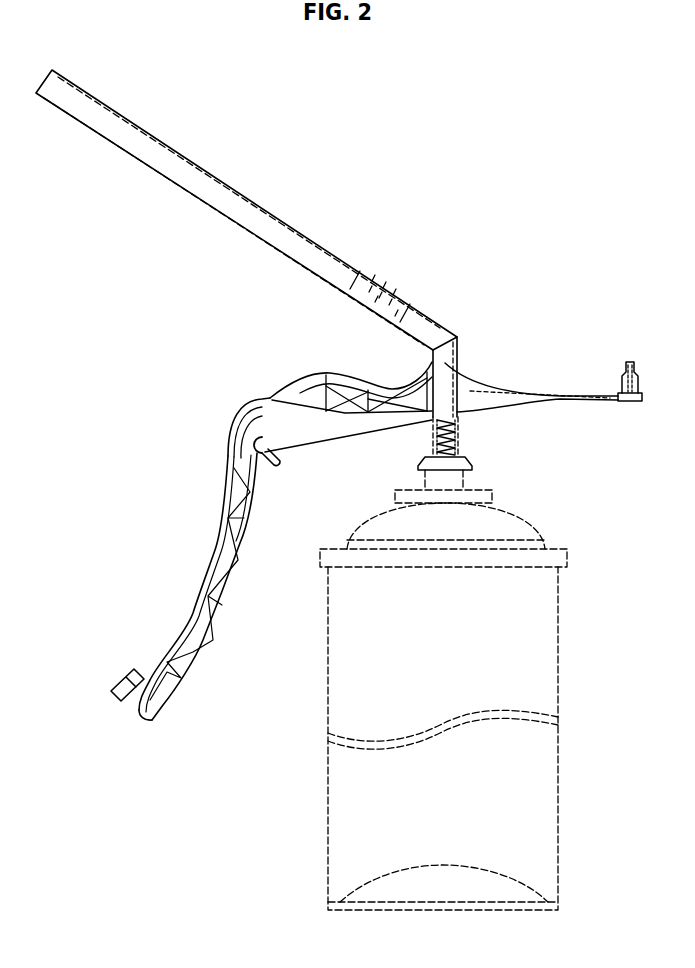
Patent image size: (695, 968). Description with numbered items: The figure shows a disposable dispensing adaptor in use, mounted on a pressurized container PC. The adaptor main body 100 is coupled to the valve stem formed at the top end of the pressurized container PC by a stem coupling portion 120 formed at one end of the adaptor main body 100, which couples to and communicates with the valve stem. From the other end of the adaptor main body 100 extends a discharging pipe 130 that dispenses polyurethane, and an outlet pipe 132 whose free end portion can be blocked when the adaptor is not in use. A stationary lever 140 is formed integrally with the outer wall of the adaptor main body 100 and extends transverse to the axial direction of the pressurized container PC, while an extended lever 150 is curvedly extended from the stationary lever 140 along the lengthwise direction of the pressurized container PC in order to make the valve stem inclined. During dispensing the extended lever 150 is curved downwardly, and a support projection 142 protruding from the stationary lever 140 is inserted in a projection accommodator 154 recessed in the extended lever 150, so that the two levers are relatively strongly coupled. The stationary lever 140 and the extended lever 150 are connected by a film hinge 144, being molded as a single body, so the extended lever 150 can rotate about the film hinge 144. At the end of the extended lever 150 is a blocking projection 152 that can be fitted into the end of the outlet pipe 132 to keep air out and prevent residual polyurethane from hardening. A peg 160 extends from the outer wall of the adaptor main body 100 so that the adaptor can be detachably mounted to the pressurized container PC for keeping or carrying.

The adaptor main body 100 is at (456, 368).
The stem coupling portion 120 is at (458, 436).
The discharging pipe 130 is at (400, 297).
The outlet pipe 132 is at (240, 190).
The stationary lever 140 is at (345, 418).
The support projection 142 is at (218, 448).
The film hinge 144 is at (272, 400).
The extended lever 150 is at (210, 555).
The blocking projection 152 is at (118, 683).
The projection accommodator 154 is at (244, 446).
The peg 160 is at (632, 360).
The pressurized container PC is at (564, 638).